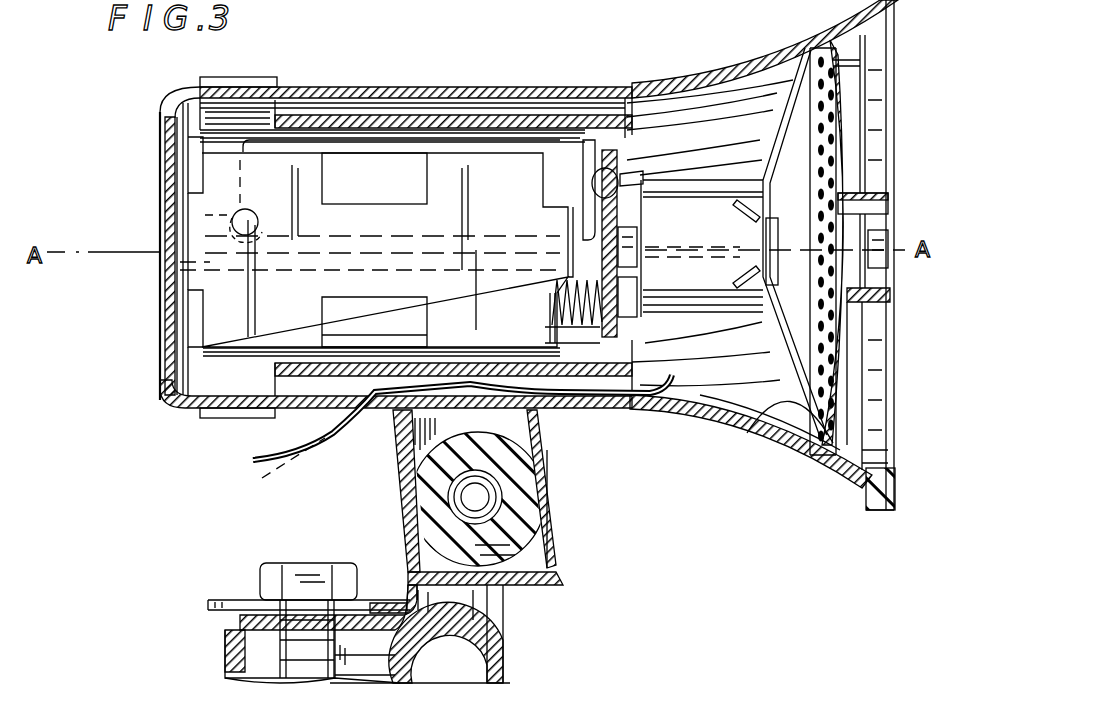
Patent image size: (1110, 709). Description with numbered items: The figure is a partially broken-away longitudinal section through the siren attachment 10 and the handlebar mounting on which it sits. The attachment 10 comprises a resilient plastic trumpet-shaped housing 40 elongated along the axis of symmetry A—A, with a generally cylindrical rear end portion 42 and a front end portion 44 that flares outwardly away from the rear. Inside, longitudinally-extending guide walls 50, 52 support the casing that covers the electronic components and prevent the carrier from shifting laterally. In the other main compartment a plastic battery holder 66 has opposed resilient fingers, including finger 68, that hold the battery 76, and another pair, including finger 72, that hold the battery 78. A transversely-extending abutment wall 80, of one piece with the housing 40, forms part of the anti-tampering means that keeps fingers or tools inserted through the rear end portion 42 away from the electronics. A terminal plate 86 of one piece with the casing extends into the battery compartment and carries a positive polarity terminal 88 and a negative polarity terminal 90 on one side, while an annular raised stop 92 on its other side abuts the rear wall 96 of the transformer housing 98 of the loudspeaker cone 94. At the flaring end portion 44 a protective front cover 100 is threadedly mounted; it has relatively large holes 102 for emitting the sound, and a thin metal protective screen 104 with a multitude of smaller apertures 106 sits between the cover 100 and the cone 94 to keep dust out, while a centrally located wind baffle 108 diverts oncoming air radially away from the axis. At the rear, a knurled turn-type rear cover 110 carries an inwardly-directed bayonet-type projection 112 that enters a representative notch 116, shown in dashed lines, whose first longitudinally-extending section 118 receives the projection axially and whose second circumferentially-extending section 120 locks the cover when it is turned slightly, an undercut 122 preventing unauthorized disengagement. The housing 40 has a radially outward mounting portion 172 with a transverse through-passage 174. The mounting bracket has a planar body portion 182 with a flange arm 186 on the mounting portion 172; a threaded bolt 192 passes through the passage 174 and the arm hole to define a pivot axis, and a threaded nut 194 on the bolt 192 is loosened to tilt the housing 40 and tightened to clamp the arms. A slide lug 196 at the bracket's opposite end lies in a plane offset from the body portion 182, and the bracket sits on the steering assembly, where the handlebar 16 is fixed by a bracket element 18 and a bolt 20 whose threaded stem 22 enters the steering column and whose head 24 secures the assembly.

The attachment 10 is at (644, 466).
The handlebar 16 is at (368, 656).
The bracket element 18 is at (503, 655).
The bolt 20 is at (370, 575).
The threaded rod-shaped stem 22 is at (300, 660).
The head 24 is at (262, 570).
The trumpet-shaped housing 40 is at (566, 80).
The rear end portion 42 is at (285, 86).
The front end portion 44 is at (808, 44).
The guide wall 50 is at (427, 126).
The guide wall 52 is at (572, 378).
The battery holder 66 is at (222, 333).
The resilient finger 68 is at (222, 167).
The resilient finger 72 is at (300, 318).
The battery 76 is at (393, 189).
The battery 78 is at (403, 326).
The abutment wall 80 is at (272, 108).
The terminal plate 86 is at (618, 158).
The positive polarity terminal 88 is at (740, 176).
The negative polarity terminal 90 is at (573, 318).
The annular raised stop 92 is at (640, 210).
The loudspeaker cone 94 is at (772, 162).
The rear wall 96 is at (645, 318).
The transformer housing 98 is at (722, 322).
The protective front cover 100 is at (832, 455).
The holes 102 is at (838, 182).
The protective screen 104 is at (762, 440).
The apertures 106 is at (876, 303).
The wind baffle 108 is at (889, 218).
The rear turn-type cover 110 is at (165, 333).
The bayonet-type projection 112 is at (290, 705).
The notch 116 is at (205, 240).
The first longitudinally-extending section 118 is at (200, 270).
The second circumferentially-extending section 120 is at (260, 213).
The undercut 122 is at (205, 215).
The mounting portion 172 is at (393, 476).
The through-passage 174 is at (440, 493).
The planar body portion 182 is at (525, 587).
The flange arm 186 is at (545, 565).
The threaded bolt 192 is at (480, 496).
The threaded nut 194 is at (556, 530).
The slide lug 196 is at (207, 605).